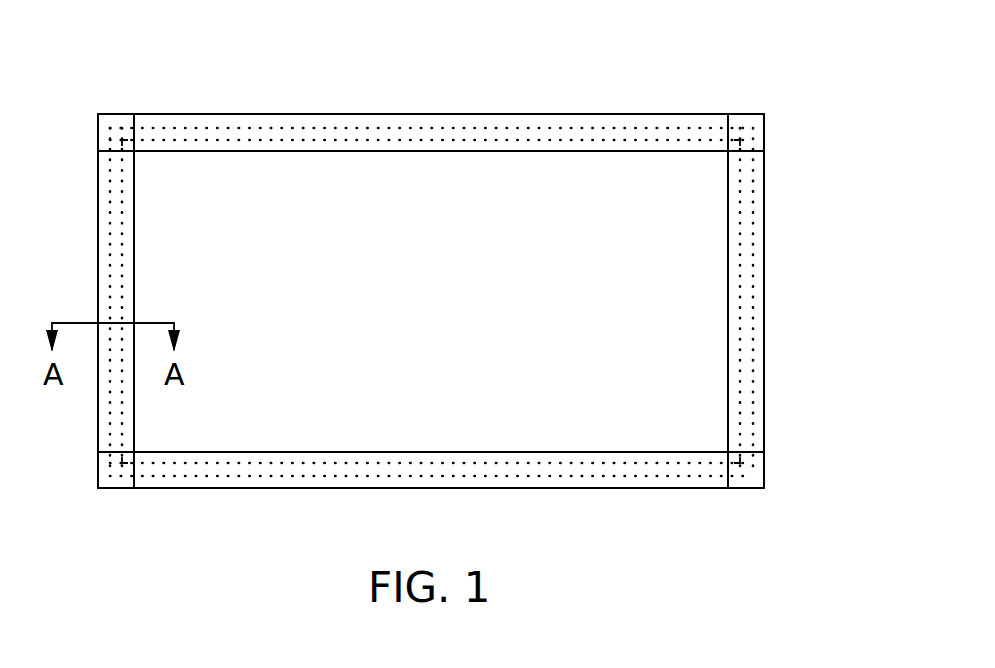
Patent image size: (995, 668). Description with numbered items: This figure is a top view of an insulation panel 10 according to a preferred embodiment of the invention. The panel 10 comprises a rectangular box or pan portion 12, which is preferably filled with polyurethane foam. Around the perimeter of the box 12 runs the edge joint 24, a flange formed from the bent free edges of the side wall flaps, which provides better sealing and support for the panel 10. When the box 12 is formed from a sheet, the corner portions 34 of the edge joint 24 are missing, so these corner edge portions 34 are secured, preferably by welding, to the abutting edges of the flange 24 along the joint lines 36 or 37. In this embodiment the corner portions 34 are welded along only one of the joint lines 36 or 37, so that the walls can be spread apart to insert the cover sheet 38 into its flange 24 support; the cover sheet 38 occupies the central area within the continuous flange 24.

The insulation panel 10 is at (513, 108).
The rectangular box or pan portion 12 is at (765, 345).
The edge joint 24 is at (677, 121).
The corner edge portions 34 is at (757, 129).
The joint line 36 is at (747, 151).
The joint line 37 is at (728, 138).
The cover sheet 38 is at (422, 298).